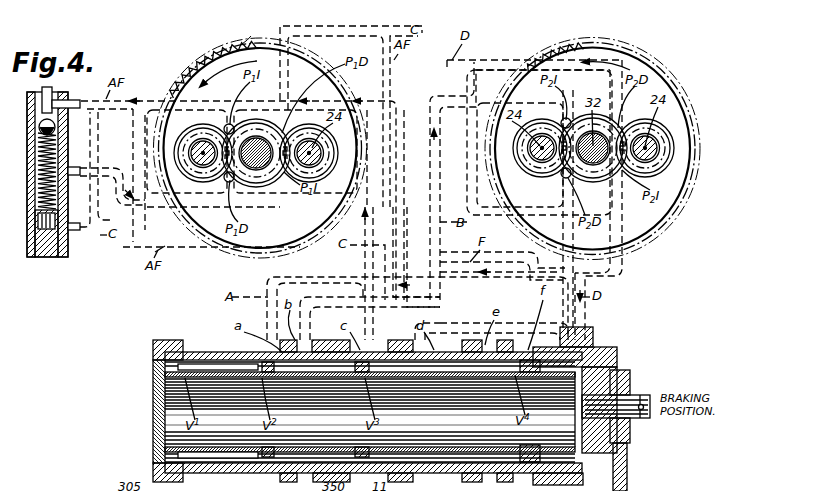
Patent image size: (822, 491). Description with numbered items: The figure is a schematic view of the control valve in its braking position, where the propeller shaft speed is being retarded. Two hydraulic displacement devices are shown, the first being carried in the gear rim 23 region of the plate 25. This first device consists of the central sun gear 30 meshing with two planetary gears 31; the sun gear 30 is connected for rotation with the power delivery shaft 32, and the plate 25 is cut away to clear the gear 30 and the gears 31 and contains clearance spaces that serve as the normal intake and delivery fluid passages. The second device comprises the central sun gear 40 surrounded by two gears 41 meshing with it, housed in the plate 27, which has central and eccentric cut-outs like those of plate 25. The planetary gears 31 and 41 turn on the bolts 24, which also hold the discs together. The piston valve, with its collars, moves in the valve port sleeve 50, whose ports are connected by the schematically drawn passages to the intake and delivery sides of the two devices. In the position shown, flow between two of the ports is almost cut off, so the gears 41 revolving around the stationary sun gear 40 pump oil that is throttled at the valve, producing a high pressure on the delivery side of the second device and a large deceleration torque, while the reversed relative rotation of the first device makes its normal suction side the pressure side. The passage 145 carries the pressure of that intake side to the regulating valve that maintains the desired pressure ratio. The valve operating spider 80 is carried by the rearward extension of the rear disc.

The gear rim 23 is at (240, 45).
The bolts 24 is at (203, 150).
The plate 25 is at (282, 126).
The plate 27 is at (655, 80).
The central sun gear 30 is at (270, 170).
The planetary gears 31 is at (322, 162).
The power delivery shaft 32 is at (256, 152).
The central sun gear 40 is at (604, 170).
The gears 41 is at (660, 150).
The valve port sleeve 50 is at (592, 348).
The valve operating spider 80 is at (622, 372).
The passage 145 is at (628, 478).